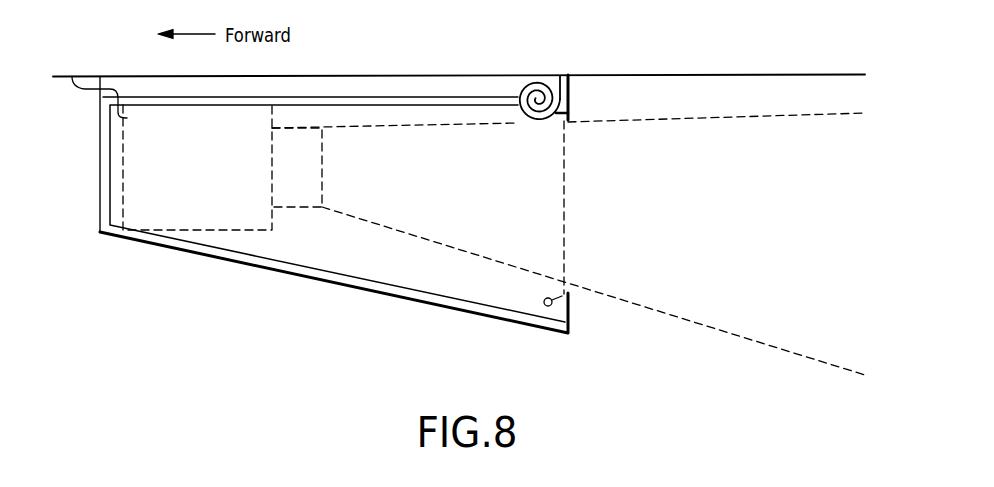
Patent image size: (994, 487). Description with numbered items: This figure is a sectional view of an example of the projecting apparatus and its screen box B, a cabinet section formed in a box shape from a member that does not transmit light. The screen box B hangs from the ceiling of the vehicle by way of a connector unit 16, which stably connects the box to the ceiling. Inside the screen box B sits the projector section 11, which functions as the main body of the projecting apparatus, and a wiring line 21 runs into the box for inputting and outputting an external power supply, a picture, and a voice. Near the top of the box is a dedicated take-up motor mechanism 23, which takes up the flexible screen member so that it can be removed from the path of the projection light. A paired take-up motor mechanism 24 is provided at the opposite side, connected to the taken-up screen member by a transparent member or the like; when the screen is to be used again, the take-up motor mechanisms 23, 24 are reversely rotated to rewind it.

The connector unit 16 is at (455, 85).
The take-up motor mechanism 23 is at (550, 80).
The wiring line 21 is at (85, 89).
The projector section 11 is at (195, 218).
The screen box B is at (323, 281).
The take-up motor mechanism 24 is at (547, 306).